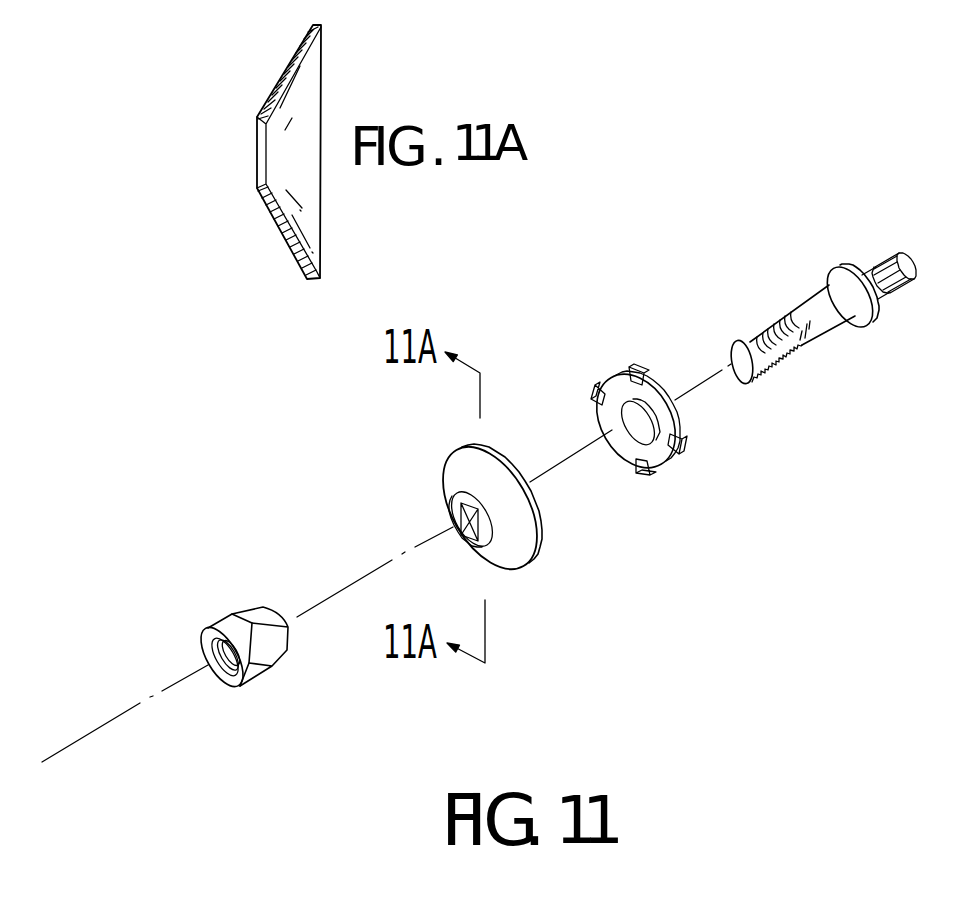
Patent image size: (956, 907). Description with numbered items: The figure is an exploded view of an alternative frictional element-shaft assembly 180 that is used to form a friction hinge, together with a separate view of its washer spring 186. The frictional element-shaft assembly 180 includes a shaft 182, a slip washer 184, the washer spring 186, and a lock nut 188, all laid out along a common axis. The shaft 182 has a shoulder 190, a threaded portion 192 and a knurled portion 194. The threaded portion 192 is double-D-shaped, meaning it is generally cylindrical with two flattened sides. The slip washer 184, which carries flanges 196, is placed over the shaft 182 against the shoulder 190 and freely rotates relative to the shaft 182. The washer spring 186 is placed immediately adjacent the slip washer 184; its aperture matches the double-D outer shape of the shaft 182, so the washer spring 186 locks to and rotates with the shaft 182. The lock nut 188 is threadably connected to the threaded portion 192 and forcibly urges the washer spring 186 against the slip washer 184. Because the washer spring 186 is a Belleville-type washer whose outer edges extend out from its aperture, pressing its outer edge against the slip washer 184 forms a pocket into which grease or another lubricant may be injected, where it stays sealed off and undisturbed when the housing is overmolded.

In FIG. 11, the frictional element-shaft assembly 180 is at (748, 597).
In FIG. 11, the shaft 182 is at (823, 318).
In FIG. 11, the slip washer 184 is at (655, 458).
In FIG. 11A, the washer spring 186 is at (270, 226).
In FIG. 11, the washer spring 186 is at (513, 530).
In FIG. 11, the lock nut 188 is at (257, 670).
In FIG. 11, the shoulder 190 is at (832, 277).
In FIG. 11, the threaded portion 192 is at (757, 328).
In FIG. 11, the knurled portion 194 is at (893, 258).
In FIG. 11, the flanges 196 is at (594, 385).